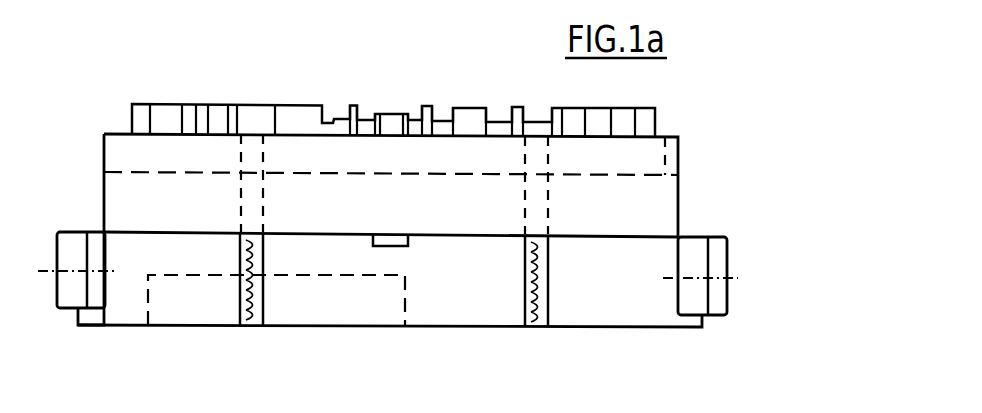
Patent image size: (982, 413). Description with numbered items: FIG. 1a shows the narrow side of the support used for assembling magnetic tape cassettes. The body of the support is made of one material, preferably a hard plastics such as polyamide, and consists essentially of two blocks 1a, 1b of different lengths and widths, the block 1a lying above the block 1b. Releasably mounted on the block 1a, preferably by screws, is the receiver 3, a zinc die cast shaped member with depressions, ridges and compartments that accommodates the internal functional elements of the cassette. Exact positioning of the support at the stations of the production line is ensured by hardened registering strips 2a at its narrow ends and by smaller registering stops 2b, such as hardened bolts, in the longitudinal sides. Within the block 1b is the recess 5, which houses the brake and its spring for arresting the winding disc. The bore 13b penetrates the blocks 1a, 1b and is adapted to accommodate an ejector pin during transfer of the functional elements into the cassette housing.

The block 1a is at (658, 196).
The block 1b is at (658, 262).
The registering strips 2a is at (72, 298).
The registering stops 2b is at (398, 243).
The receiver 3 is at (624, 121).
The recess 5 is at (317, 307).
The bore 13b is at (253, 313).